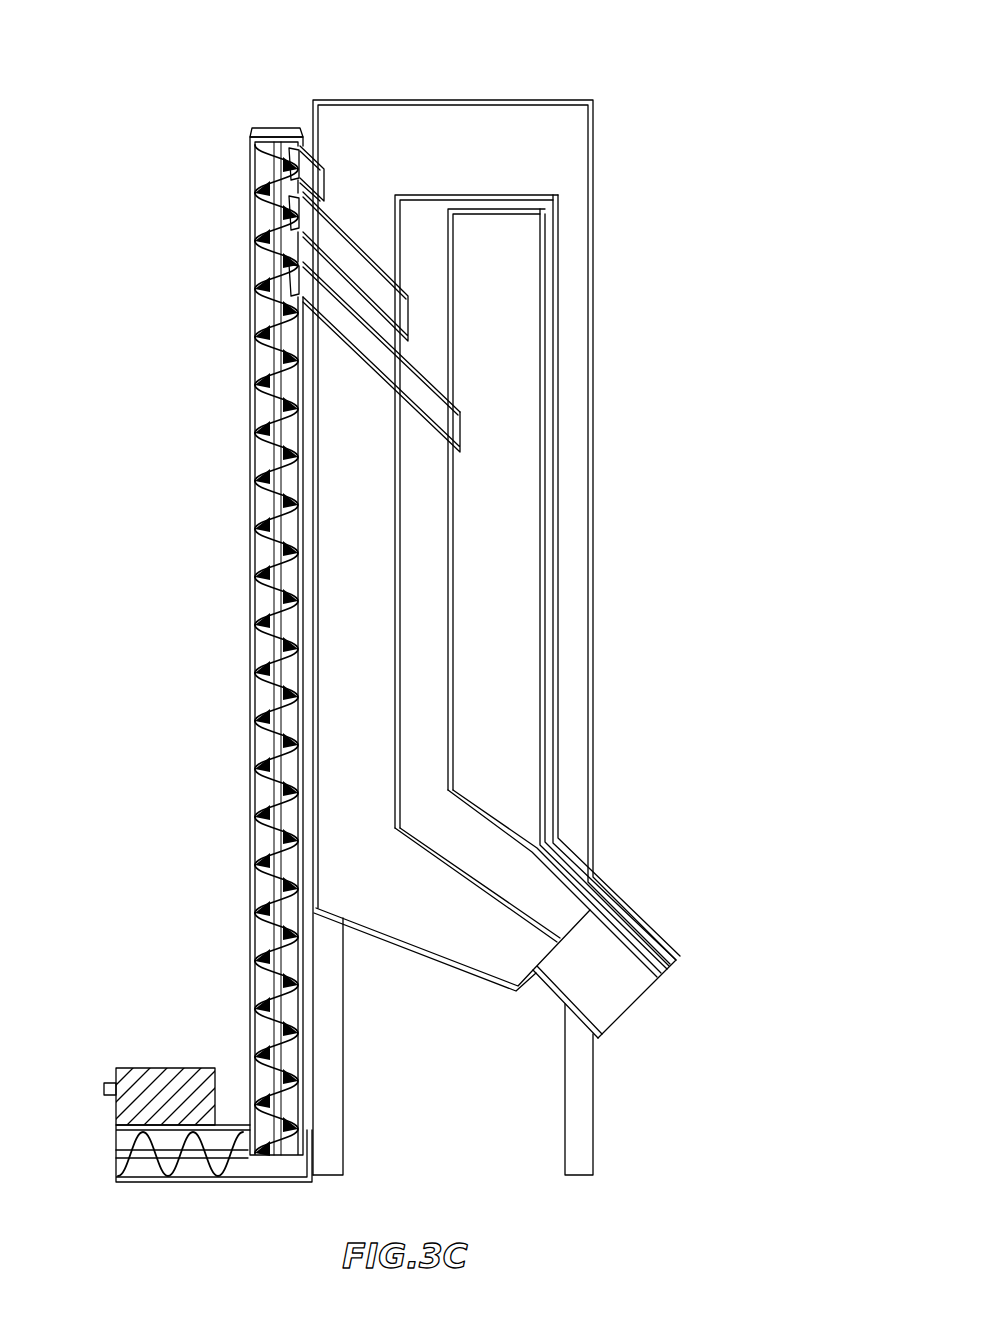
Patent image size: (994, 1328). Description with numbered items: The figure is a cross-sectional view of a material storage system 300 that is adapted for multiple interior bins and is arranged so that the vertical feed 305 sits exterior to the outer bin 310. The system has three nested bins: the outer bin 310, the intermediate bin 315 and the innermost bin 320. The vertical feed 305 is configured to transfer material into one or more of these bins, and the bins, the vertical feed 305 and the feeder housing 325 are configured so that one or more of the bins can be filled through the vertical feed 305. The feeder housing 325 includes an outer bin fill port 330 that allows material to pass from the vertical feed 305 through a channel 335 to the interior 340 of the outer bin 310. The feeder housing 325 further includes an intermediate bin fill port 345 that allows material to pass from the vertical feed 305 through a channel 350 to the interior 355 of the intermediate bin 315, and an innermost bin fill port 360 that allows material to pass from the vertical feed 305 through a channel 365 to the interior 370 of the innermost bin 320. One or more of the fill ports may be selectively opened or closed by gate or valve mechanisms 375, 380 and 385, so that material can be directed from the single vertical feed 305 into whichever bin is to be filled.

The material storage system 300 is at (700, 82).
The vertical feed 305 is at (228, 868).
The outer bin 310 is at (598, 562).
The intermediate bin 315 is at (553, 712).
The innermost bin 320 is at (560, 735).
The feeder housing 325 is at (250, 432).
The outer bin fill port 330 is at (302, 130).
The channel 335 is at (322, 165).
The interior of outer bin 340 is at (346, 530).
The intermediate bin fill port 345 is at (252, 247).
The channel 350 is at (340, 224).
The interior of intermediate bin 355 is at (421, 600).
The innermost bin fill port 360 is at (308, 322).
The channel 365 is at (422, 372).
The interior of innermost bin 370 is at (512, 505).
The gate or valve mechanism 375 is at (252, 168).
The gate or valve mechanism 380 is at (252, 222).
The gate or valve mechanism 385 is at (252, 280).